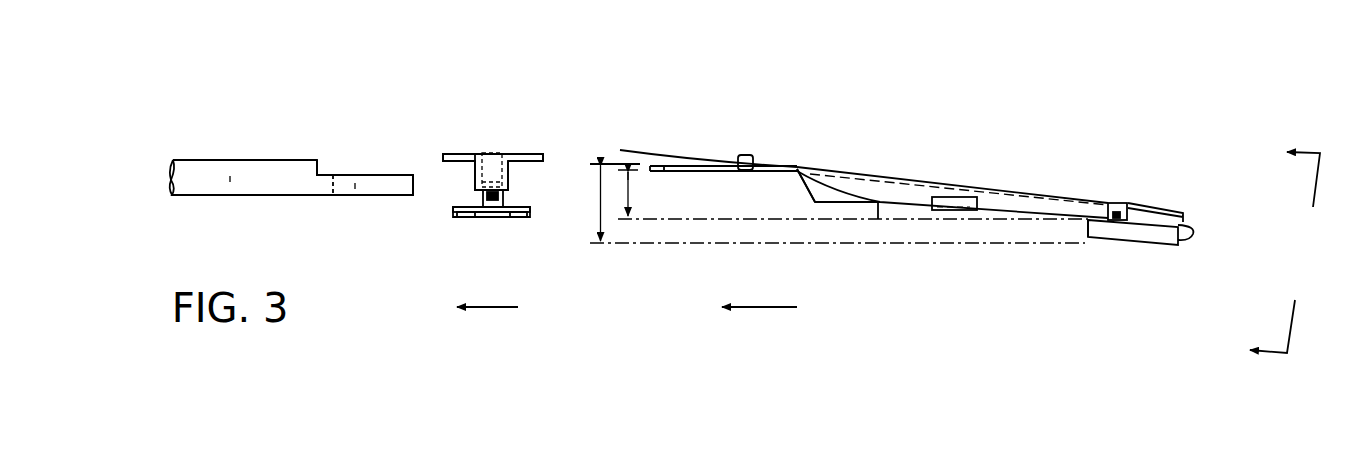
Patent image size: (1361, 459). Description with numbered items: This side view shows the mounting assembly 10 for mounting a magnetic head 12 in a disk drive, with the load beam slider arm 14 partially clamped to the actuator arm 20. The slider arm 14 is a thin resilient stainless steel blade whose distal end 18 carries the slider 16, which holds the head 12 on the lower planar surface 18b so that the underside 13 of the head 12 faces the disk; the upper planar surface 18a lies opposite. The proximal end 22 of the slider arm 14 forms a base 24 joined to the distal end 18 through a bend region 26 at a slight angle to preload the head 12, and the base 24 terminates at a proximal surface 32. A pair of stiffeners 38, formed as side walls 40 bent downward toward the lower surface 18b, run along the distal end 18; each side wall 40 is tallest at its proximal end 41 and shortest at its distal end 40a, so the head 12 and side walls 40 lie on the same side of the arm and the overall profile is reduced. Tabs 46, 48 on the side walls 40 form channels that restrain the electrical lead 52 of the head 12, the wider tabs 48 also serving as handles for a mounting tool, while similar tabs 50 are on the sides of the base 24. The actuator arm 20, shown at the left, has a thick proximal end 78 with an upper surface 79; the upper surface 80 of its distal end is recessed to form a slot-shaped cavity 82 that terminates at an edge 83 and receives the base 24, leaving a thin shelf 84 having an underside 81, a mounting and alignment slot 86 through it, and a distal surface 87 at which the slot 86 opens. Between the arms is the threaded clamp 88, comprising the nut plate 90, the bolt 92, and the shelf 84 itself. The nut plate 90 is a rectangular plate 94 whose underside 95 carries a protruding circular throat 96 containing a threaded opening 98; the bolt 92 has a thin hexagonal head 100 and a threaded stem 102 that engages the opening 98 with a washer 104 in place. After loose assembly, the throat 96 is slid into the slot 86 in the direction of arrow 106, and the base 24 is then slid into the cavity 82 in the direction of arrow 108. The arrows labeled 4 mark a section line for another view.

The section line for FIG. 4 is at (1276, 243).
The mounting assembly 10 is at (921, 157).
The magnetic head 12 is at (1172, 235).
The underside 13 is at (1143, 245).
The load beam slider arm 14 is at (988, 151).
The slider 16 is at (1183, 213).
The distal end 18 is at (988, 170).
The upper planar surface 18a is at (920, 178).
The lower planar surface 18b is at (888, 158).
The actuator arm 20 is at (262, 108).
The proximal end 22 is at (850, 168).
The base 24 is at (707, 172).
The bend region 26 is at (800, 133).
The proximal surface 32 is at (641, 163).
The stiffeners 38 is at (843, 217).
The side walls 40 is at (878, 220).
The distal end 40a is at (1090, 224).
The proximal end 41 is at (813, 202).
The tabs 46 is at (1112, 203).
The tabs 48 is at (957, 198).
The tabs 50 is at (746, 155).
The electrical lead 52 is at (1197, 234).
The proximal end 78 is at (193, 158).
The upper surface 79 is at (243, 160).
The upper surface 80 is at (373, 175).
The underside 81 is at (237, 197).
The slot-shaped cavity 82 is at (348, 148).
The edge 83 is at (319, 167).
The shelf 84 is at (338, 198).
The mounting and alignment slot 86 is at (395, 188).
The distal surface 87 is at (414, 195).
The threaded clamp 88 is at (508, 170).
The threaded nut plate 90 is at (542, 140).
The bolt 92 is at (523, 228).
The plate 94 is at (473, 154).
The underside 95 is at (467, 163).
The throat 96 is at (513, 177).
The threaded opening 98 is at (493, 160).
The head 100 is at (473, 213).
The threaded stem 102 is at (510, 193).
The washer 104 is at (530, 208).
The arrow 106 is at (492, 310).
The arrow 108 is at (767, 310).